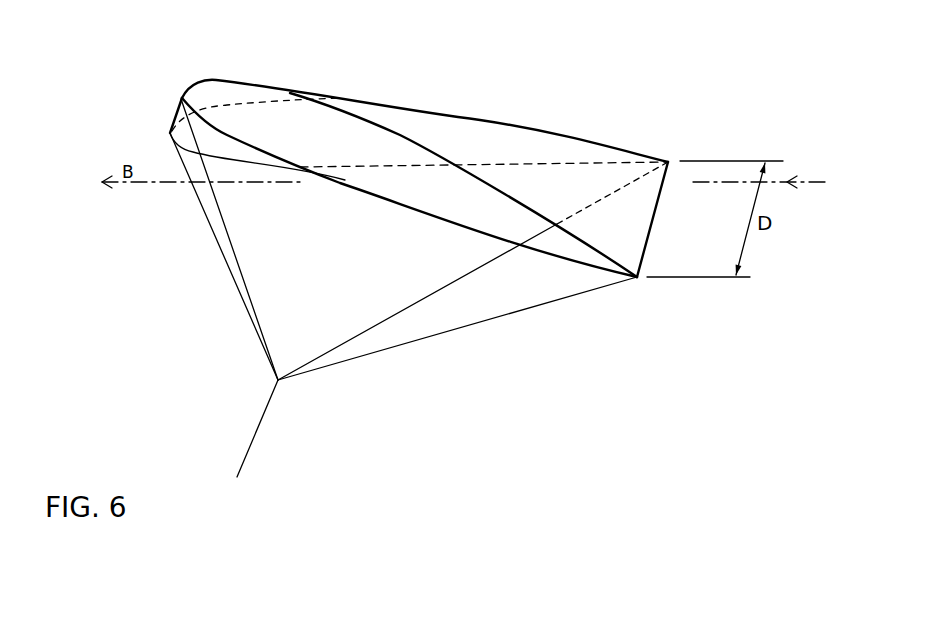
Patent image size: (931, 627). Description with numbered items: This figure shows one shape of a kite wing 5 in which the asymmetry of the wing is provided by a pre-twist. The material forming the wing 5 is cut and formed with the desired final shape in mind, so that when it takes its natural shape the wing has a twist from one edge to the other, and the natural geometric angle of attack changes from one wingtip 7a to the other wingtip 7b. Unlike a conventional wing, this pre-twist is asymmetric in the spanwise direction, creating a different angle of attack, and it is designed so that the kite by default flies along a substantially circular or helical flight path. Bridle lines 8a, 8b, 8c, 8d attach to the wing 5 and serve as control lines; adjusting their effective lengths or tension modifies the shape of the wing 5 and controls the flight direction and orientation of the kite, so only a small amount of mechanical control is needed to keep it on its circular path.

The wing 5 is at (627, 243).
The wingtip 7a is at (443, 205).
The wingtip 7b is at (505, 122).
The bridle line 8a is at (223, 263).
The bridle line 8b is at (210, 190).
The bridle line 8c is at (460, 278).
The bridle line 8d is at (380, 352).